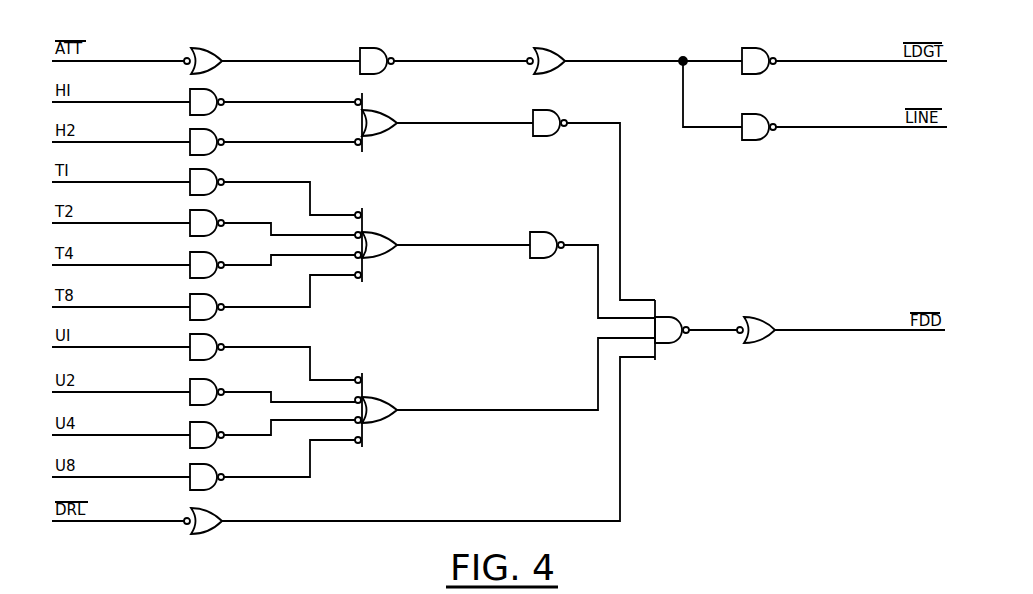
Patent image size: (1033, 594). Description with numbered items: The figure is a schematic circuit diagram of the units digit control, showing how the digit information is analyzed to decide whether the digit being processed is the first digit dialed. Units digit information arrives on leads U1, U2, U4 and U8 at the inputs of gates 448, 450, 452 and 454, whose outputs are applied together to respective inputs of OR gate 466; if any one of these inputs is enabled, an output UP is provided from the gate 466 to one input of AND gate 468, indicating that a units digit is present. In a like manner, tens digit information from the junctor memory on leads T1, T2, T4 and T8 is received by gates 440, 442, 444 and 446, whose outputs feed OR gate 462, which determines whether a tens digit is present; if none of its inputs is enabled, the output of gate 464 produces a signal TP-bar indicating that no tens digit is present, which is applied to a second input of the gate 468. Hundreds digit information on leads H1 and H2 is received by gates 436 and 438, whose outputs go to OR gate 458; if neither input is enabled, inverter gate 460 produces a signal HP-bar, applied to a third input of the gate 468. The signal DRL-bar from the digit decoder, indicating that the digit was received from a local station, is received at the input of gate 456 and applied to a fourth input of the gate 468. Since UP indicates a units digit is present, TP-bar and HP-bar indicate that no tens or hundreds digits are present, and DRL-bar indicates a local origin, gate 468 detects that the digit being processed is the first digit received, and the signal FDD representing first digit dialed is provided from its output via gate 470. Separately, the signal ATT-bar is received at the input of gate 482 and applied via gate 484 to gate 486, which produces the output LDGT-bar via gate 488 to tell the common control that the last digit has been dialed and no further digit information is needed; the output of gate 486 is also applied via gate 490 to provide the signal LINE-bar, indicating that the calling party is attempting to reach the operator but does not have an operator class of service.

The gate 436 is at (217, 92).
The gate 438 is at (217, 130).
The gate 440 is at (217, 171).
The gate 442 is at (217, 212).
The gate 444 is at (217, 276).
The gate 446 is at (217, 318).
The gate 448 is at (220, 358).
The gate 450 is at (214, 402).
The gate 452 is at (216, 447).
The gate 454 is at (216, 490).
The gate 456 is at (204, 533).
The OR gate 458 is at (375, 136).
The inverter gate 460 is at (540, 136).
The OR gate 462 is at (380, 258).
The gate 464 is at (542, 258).
The OR gate 466 is at (382, 422).
The AND gate 468 is at (670, 316).
The gate 470 is at (755, 317).
The gate 482 is at (214, 48).
The gate 484 is at (389, 47).
The gate 486 is at (551, 47).
The gate 488 is at (769, 48).
The gate 490 is at (768, 114).